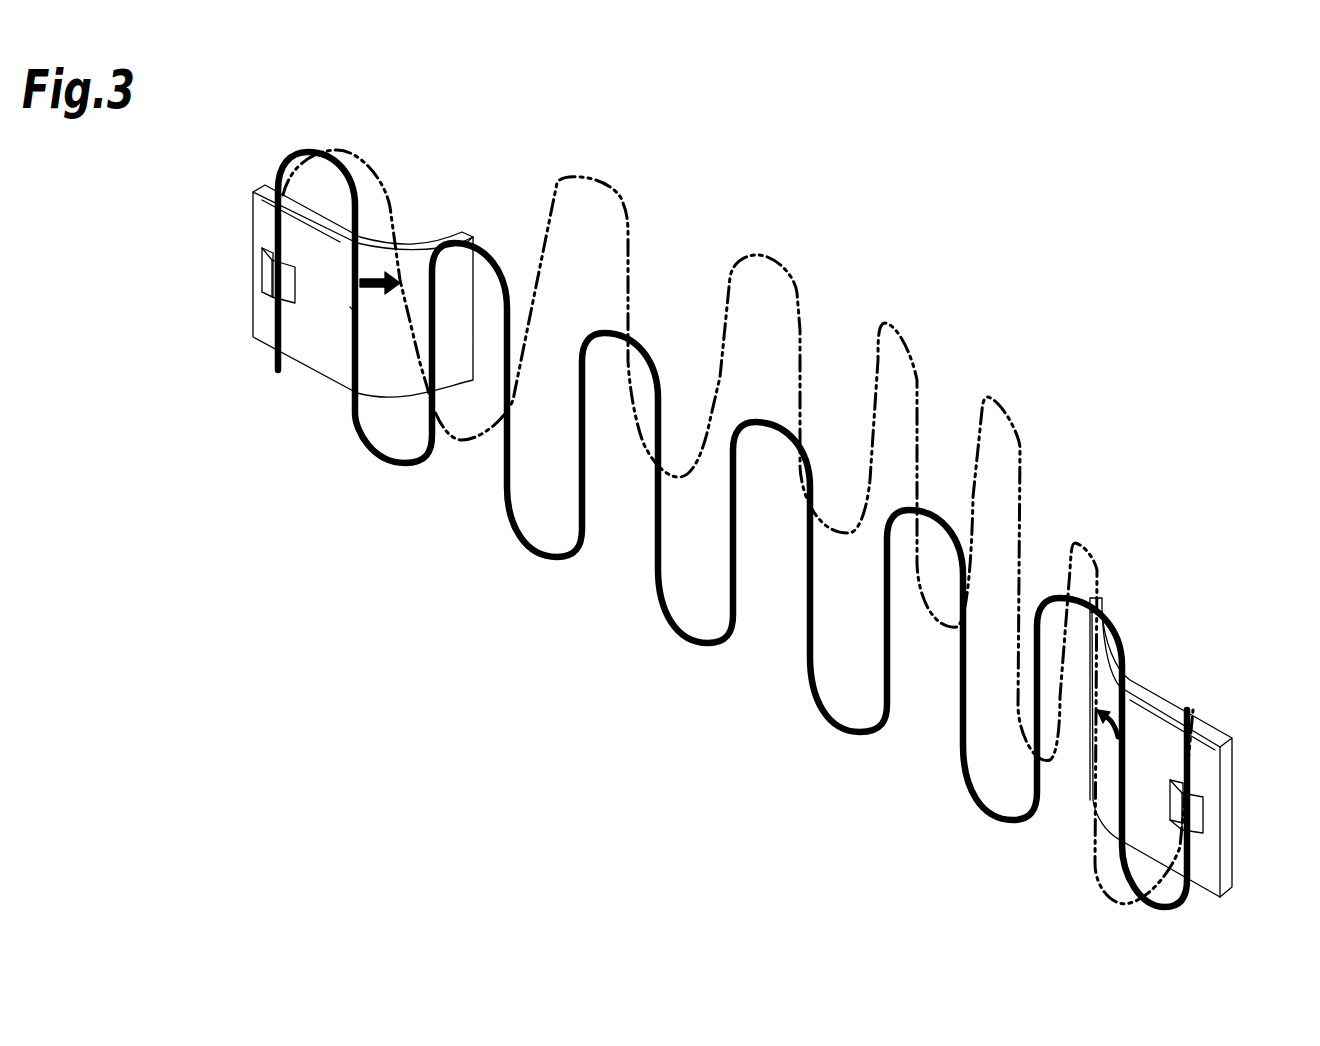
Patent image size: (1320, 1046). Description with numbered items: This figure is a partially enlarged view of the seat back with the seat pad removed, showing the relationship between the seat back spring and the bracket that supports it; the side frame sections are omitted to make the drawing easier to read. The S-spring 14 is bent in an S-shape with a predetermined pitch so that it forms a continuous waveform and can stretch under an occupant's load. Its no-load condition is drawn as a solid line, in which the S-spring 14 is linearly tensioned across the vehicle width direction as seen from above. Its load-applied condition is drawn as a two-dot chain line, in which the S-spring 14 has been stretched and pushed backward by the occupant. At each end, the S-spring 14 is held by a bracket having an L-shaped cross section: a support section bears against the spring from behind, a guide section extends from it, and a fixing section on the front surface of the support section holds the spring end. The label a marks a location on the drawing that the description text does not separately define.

The S-spring 14 is at (540, 553).
The gap a is at (350, 307).